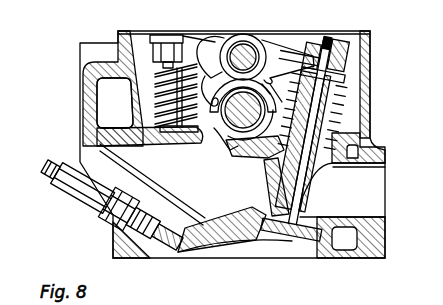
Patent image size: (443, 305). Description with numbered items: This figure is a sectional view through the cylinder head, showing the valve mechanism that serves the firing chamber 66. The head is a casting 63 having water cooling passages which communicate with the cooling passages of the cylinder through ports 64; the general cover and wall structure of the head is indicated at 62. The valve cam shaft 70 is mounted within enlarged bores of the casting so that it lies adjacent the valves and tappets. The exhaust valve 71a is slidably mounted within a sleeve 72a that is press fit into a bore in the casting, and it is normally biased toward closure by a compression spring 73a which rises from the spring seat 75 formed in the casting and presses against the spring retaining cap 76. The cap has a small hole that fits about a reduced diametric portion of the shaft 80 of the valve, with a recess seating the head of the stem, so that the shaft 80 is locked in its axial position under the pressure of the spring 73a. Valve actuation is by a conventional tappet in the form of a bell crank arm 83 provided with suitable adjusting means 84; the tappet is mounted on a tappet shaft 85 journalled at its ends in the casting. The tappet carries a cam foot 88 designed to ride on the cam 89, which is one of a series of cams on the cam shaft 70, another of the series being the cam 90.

The cylinder head cover 62 is at (96, 36).
The casting 63 is at (82, 67).
The ports 64 is at (103, 98).
The firing chamber 66 is at (203, 250).
The valve cam shaft 70 is at (233, 132).
The exhaust valve 71a is at (275, 240).
The sleeve 72a is at (318, 187).
The compression spring 73a is at (338, 118).
The spring seat 75 is at (336, 140).
The spring retaining cap 76 is at (350, 72).
The shaft 80 is at (300, 209).
The bell crank arm 83 is at (280, 42).
The adjusting means 84 is at (330, 38).
The tappet shaft 85 is at (245, 44).
The cam foot 88 is at (212, 62).
The cam 89 is at (227, 153).
The cam 90 is at (196, 137).